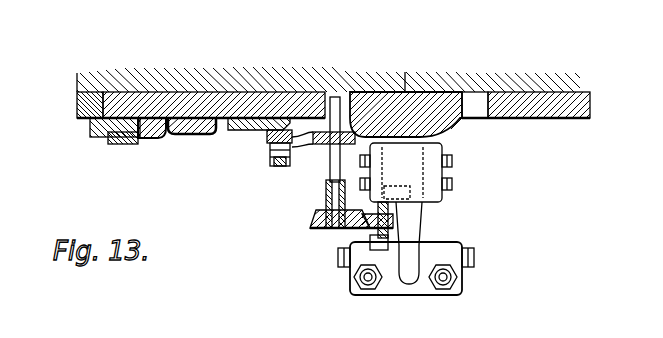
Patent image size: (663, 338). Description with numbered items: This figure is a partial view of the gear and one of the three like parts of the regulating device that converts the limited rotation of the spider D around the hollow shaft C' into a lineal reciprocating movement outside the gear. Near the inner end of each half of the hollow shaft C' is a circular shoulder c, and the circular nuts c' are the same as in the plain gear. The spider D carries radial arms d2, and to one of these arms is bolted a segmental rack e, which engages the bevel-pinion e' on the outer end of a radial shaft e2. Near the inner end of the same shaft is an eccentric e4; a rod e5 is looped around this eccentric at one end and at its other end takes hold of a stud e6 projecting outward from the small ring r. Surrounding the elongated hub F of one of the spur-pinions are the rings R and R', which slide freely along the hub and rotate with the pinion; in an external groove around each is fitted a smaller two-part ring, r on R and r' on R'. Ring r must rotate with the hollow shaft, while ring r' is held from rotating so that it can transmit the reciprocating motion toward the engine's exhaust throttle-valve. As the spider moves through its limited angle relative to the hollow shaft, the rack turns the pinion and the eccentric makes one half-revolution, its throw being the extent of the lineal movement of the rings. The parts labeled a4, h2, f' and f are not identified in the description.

The hollow shaft C' is at (328, 67).
The circular nut c' is at (75, 105).
The circular shoulder c is at (409, 123).
The spider D is at (430, 100).
The elongated hub F is at (195, 137).
The ring R' is at (102, 146).
The smaller ring r' is at (123, 152).
The ring R is at (249, 146).
The smaller ring r is at (270, 146).
The eccentric e4 is at (332, 139).
The rod e5 is at (290, 170).
The stud e6 is at (272, 166).
The radial shaft e2 is at (330, 175).
The bevel-pinion e' is at (321, 222).
The segmental rack e is at (351, 230).
The box a4 is at (406, 172).
The radial arm d2 is at (407, 224).
The clamp h2 is at (390, 288).
The clamp lug f' is at (414, 259).
The bolt f is at (406, 300).